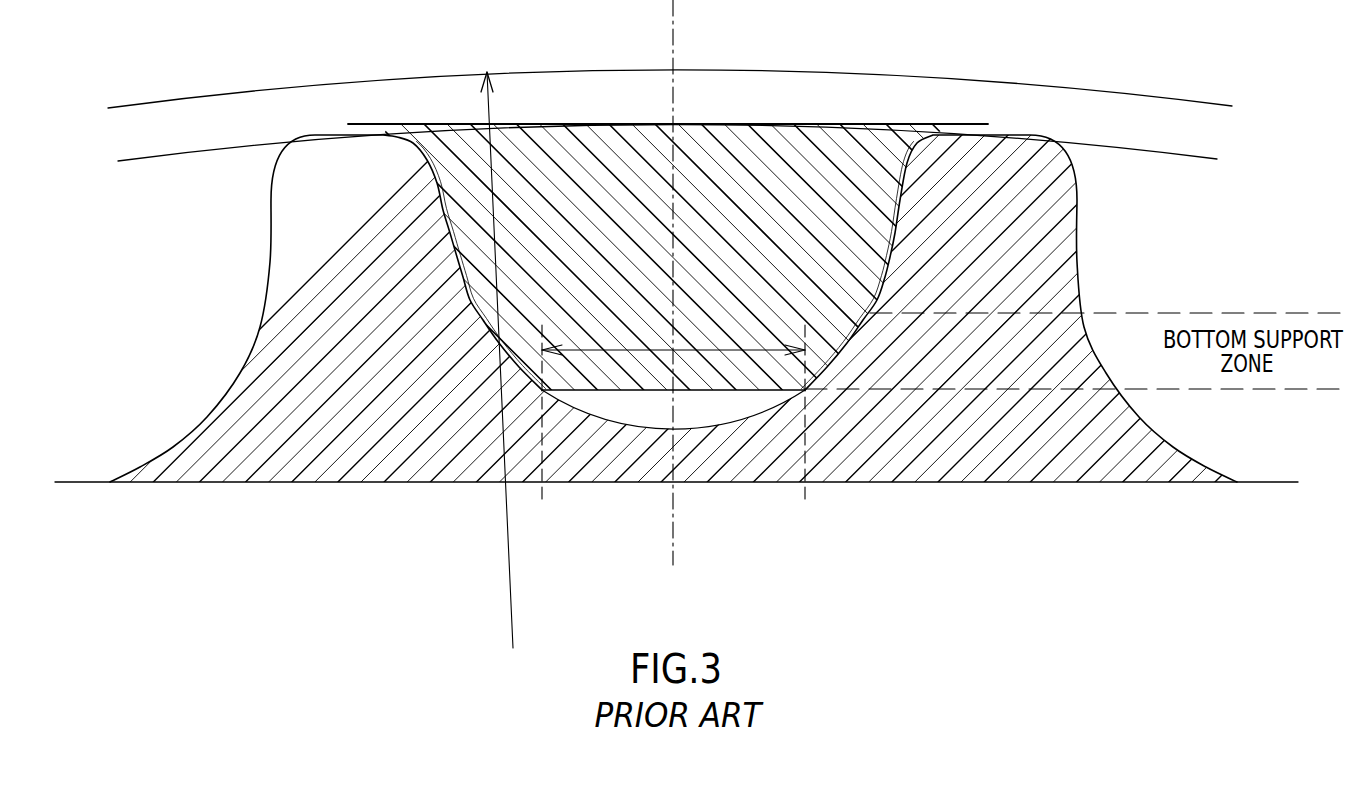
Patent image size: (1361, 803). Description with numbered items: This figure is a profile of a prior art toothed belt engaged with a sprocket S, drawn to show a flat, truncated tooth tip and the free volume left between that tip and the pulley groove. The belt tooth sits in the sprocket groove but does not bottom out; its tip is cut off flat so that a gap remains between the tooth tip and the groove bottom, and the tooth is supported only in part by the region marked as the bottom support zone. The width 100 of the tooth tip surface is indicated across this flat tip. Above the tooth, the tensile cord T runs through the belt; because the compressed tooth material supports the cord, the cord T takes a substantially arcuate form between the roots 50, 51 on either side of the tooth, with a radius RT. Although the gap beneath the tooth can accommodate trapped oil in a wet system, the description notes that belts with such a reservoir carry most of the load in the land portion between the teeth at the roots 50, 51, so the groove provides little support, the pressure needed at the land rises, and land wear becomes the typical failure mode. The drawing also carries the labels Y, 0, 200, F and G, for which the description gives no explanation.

The root 50 is at (390, 125).
The root 51 is at (962, 123).
The width of tooth tip surface 100 is at (708, 350).
The groove bottom 200 is at (763, 467).
The sprocket S is at (327, 412).
The tensile cord T is at (832, 72).
The axis of symmetry Y is at (677, 68).
The origin 0 is at (675, 123).
The radius RT is at (508, 535).
The left contact point F is at (533, 395).
The right contact point G is at (808, 395).